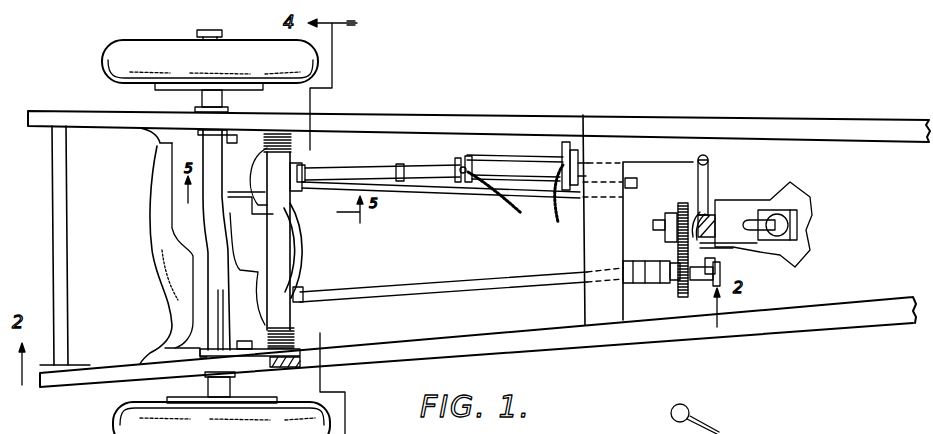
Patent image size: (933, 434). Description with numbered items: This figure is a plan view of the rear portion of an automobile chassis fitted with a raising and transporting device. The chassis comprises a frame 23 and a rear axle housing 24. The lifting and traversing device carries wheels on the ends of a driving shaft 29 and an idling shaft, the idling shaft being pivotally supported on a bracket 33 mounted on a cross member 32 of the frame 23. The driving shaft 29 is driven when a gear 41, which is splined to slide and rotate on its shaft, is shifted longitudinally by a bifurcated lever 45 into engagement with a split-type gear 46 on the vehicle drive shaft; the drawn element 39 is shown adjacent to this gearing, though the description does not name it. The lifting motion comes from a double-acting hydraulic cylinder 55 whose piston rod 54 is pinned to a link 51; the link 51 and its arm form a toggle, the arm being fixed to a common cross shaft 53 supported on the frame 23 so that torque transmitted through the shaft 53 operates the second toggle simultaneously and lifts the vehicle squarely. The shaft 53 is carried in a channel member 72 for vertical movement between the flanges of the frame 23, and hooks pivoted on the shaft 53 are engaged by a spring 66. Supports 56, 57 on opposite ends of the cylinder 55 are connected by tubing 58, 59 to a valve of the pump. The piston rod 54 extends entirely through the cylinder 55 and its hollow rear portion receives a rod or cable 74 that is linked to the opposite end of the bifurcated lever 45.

The frame 23 is at (460, 348).
The rear axle housing 24 is at (210, 310).
The driving shaft 29 is at (447, 283).
The cross member 32 is at (618, 220).
The bracket 33 is at (637, 183).
The pinion shaft 39 is at (676, 232).
The gear 41 is at (686, 295).
The bifurcated lever 45 is at (720, 250).
The gear 46 is at (682, 200).
The link 51 is at (440, 190).
The shaft 53 is at (300, 255).
The piston rod 54 is at (368, 167).
The cylinder 55 is at (511, 155).
The support 56 is at (460, 158).
The support 57 is at (568, 150).
The tubing 58 is at (522, 214).
The tubing 59 is at (558, 222).
The spring 66 is at (292, 338).
The channel member 72 is at (320, 368).
The rod or cable 74 is at (640, 162).